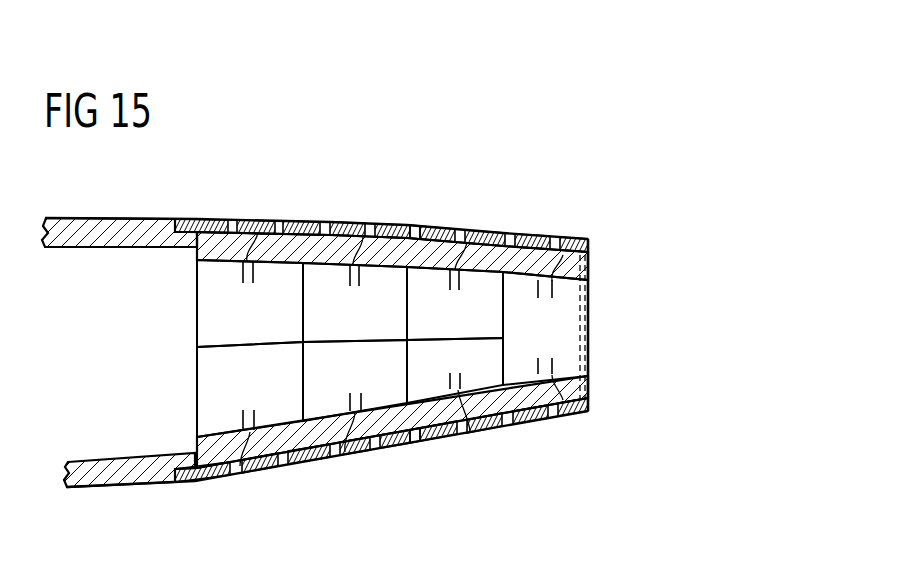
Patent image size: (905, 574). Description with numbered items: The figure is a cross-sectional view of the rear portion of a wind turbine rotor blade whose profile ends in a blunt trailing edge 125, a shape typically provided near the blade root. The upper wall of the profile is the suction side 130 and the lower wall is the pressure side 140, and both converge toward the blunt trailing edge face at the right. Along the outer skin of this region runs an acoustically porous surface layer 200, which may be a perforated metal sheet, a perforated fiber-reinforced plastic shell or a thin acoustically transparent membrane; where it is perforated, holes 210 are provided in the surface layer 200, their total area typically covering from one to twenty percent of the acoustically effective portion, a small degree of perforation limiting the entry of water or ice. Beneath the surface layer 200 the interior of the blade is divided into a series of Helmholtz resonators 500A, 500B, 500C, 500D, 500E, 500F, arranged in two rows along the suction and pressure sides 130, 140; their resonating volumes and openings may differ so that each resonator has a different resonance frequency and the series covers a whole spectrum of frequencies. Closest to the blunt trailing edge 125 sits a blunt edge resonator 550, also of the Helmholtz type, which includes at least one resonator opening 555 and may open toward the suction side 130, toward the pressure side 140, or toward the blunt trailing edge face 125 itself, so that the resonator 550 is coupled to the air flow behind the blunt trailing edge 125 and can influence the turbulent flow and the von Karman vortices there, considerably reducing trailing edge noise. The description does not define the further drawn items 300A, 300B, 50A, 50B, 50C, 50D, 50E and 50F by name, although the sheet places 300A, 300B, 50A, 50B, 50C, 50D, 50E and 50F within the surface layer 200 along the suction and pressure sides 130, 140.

The blunt trailing edge 125 is at (633, 250).
The suction side 130 is at (115, 228).
The pressure side 140 is at (110, 484).
The acoustically porous surface layer 200 is at (350, 222).
The holes 210 is at (418, 218).
The first sensor element 300A is at (218, 242).
The first sensor element (lower) 300B is at (200, 480).
The sensor 50A is at (254, 258).
The sensor 50B is at (385, 223).
The sensor 50C is at (483, 229).
The sensor 50D is at (266, 475).
The sensor 50E is at (355, 454).
The sensor 50F is at (485, 430).
The resonator opening 555 is at (572, 237).
The blunt edge resonator 550 is at (563, 343).
The Helmholtz resonator 500A is at (275, 326).
The Helmholtz resonator 500B is at (389, 324).
The Helmholtz resonator 500C is at (483, 322).
The Helmholtz resonator 500D is at (278, 391).
The Helmholtz resonator 500E is at (388, 375).
The Helmholtz resonator 500F is at (483, 370).